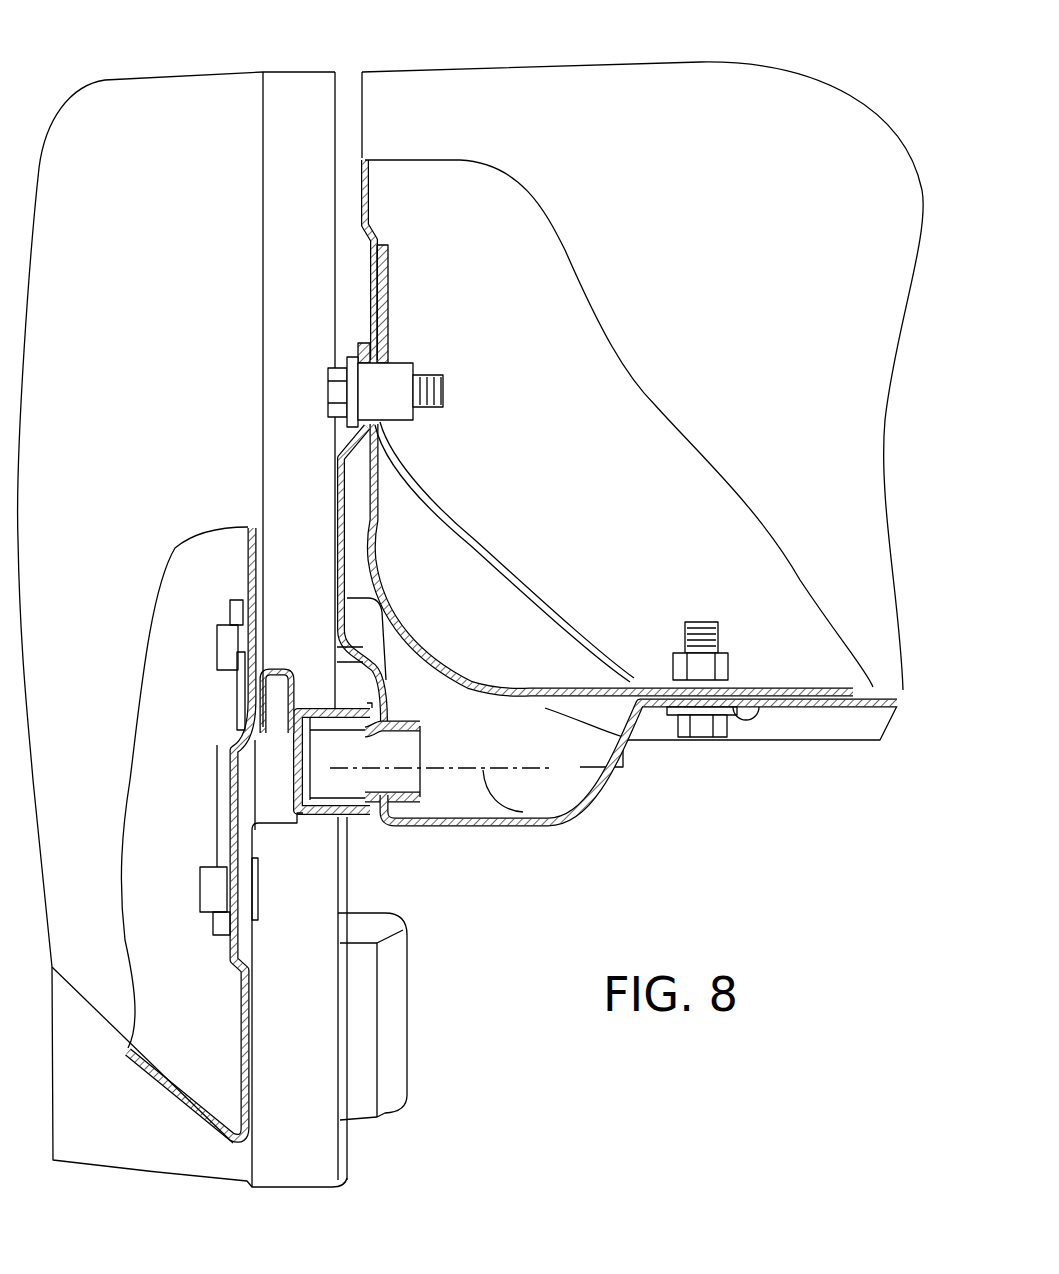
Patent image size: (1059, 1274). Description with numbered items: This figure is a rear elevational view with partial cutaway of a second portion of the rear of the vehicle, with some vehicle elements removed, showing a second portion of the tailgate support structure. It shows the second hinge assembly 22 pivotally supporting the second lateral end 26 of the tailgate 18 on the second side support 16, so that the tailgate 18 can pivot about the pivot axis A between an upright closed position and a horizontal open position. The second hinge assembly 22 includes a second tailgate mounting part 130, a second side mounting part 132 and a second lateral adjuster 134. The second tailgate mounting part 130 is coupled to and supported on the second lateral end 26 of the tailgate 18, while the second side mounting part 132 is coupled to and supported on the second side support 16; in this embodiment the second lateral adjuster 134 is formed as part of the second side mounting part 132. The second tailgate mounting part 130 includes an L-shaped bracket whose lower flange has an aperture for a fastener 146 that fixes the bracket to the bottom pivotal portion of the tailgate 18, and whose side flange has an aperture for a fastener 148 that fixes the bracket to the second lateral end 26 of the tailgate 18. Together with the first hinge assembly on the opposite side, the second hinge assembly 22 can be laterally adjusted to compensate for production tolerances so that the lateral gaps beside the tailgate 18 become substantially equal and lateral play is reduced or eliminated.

The second side support 16 is at (133, 146).
The tailgate 18 is at (691, 128).
The second lateral end 26 is at (360, 117).
The second hinge assembly 22 is at (376, 842).
The second tailgate mounting part 130 is at (464, 842).
The second side mounting part 132 is at (262, 750).
The second lateral adjuster 134 is at (305, 834).
The fastener 146 is at (702, 620).
The fastener 148 is at (430, 408).
The pivot axis A is at (530, 811).